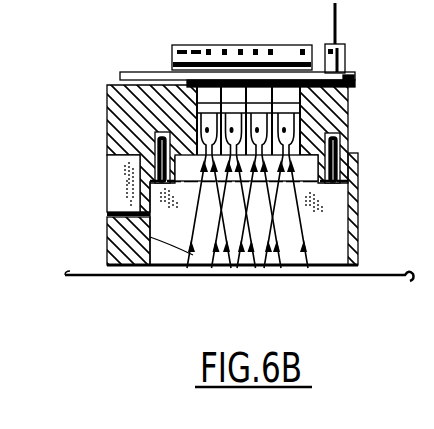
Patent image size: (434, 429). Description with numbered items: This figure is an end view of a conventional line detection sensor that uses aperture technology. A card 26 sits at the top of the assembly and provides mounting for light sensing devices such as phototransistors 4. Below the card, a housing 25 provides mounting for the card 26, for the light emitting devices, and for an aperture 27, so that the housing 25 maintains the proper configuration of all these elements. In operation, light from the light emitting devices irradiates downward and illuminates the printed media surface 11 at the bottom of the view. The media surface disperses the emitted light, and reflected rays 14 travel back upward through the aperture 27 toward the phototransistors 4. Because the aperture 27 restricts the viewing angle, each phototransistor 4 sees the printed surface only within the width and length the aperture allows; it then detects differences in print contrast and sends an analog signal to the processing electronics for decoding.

The phototransistor 4 is at (300, 131).
The printed media surface 11 is at (373, 273).
The reflected rays 14 is at (107, 232).
The housing 25 is at (106, 131).
The card 26 is at (152, 72).
The aperture 27 is at (323, 181).